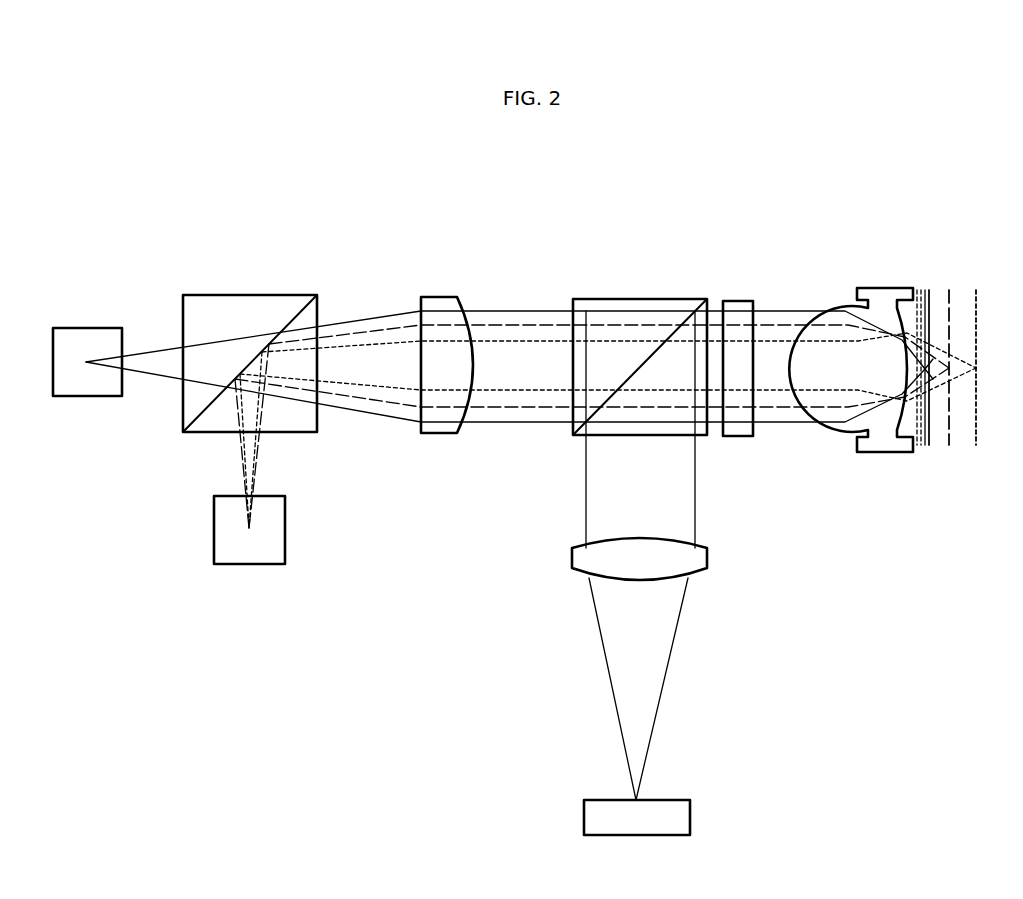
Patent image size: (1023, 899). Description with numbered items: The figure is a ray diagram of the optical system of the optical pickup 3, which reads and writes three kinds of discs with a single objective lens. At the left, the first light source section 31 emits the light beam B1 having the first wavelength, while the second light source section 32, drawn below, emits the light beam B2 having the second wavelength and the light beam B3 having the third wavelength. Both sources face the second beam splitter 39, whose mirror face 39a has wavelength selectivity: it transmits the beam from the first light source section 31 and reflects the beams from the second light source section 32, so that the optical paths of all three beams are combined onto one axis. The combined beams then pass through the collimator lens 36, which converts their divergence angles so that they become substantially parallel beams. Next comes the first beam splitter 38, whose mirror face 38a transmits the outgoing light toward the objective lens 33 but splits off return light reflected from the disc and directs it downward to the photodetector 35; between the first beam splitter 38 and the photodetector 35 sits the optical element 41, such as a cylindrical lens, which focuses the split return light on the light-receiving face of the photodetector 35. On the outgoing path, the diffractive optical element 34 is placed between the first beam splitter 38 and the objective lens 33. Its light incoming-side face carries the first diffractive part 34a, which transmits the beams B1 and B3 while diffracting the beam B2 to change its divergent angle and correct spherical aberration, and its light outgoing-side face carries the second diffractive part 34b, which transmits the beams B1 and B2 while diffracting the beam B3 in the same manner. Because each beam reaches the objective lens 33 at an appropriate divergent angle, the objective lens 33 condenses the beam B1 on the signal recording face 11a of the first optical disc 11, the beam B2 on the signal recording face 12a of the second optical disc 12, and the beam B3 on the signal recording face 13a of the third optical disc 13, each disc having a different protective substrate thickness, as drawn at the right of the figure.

The optical pickup 3 is at (393, 186).
The first light source section 31 is at (85, 327).
The second light source section 32 is at (234, 565).
The objective lens 33 is at (877, 288).
The diffractive optical element 34 is at (740, 300).
The first diffractive part 34a is at (723, 302).
The second diffractive part 34b is at (757, 302).
The photodetector 35 is at (691, 820).
The collimator lens 36 is at (437, 296).
The first beam splitter 38 is at (607, 298).
The mirror face 38a is at (652, 352).
The second beam splitter 39 is at (211, 294).
The mirror face 39a is at (292, 318).
The optical element 41 is at (708, 555).
The first optical disc 11 is at (921, 288).
The signal recording face 11a is at (927, 448).
The second optical disc 12 is at (948, 288).
The signal recording face 12a is at (948, 448).
The third optical disc 13 is at (969, 298).
The signal recording face 13a is at (975, 448).
The light beam having the first wavelength B1 is at (482, 309).
The light beam having the second wavelength B2 is at (518, 308).
The light beam having the third wavelength B3 is at (557, 340).